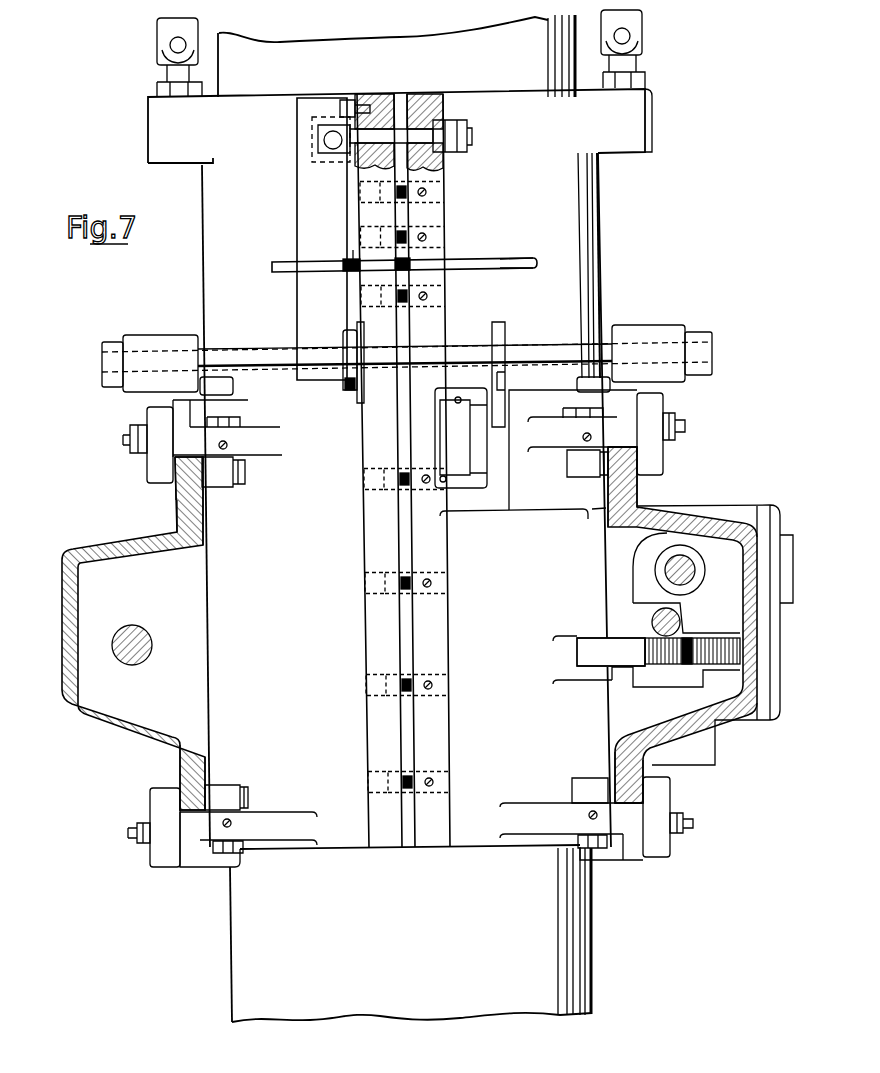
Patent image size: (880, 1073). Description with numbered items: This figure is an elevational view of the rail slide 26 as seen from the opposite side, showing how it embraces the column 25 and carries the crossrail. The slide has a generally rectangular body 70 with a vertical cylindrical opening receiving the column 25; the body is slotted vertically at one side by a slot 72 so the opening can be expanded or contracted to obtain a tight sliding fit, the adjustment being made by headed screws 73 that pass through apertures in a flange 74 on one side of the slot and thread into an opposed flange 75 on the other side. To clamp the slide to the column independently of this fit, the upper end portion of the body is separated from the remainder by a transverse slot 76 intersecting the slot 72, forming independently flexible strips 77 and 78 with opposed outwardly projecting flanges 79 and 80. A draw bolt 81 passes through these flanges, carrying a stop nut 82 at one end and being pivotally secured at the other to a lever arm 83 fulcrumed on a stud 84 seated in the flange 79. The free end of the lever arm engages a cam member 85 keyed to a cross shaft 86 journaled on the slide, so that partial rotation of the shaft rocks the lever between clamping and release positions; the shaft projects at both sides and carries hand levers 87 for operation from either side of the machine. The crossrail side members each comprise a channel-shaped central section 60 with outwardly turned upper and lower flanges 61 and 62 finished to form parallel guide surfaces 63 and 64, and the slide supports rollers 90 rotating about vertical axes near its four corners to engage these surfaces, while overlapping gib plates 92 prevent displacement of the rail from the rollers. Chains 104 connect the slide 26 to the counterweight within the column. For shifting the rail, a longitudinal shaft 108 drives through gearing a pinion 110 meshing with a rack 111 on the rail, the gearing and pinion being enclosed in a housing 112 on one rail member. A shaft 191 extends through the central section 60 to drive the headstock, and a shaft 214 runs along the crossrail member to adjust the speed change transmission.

The column 25 is at (228, 990).
The slide 26 is at (470, 866).
The channel-shaped central section 60 is at (78, 553).
The upper flange 61 is at (182, 513).
The lower flange 62 is at (183, 760).
The guide surface 63 is at (175, 475).
The guide surface 64 is at (179, 797).
The body 70 is at (513, 845).
The slot 72 is at (406, 635).
The headed screws 73 is at (371, 765).
The flange 74 is at (370, 737).
The flange 75 is at (447, 738).
The transverse slot 76 is at (503, 268).
The flexible strip 77 is at (481, 259).
The flexible strip 78 is at (353, 251).
The flange 79 is at (376, 231).
The flange 80 is at (441, 223).
The draw bolt 81 is at (374, 138).
The stop nut 82 is at (448, 150).
The lever arm 83 is at (306, 210).
The stud 84 is at (347, 99).
The cam member 85 is at (348, 376).
The cross shaft 86 is at (286, 369).
The hand levers 87 is at (118, 342).
The rollers 90 is at (236, 485).
The gib plates 92 is at (150, 470).
The chains 104 is at (172, 36).
The shaft 108 is at (697, 564).
The pinion 110 is at (667, 665).
The rack 111 is at (631, 652).
The housing 112 is at (748, 506).
The shaft 191 is at (139, 633).
The shaft 214 is at (652, 621).